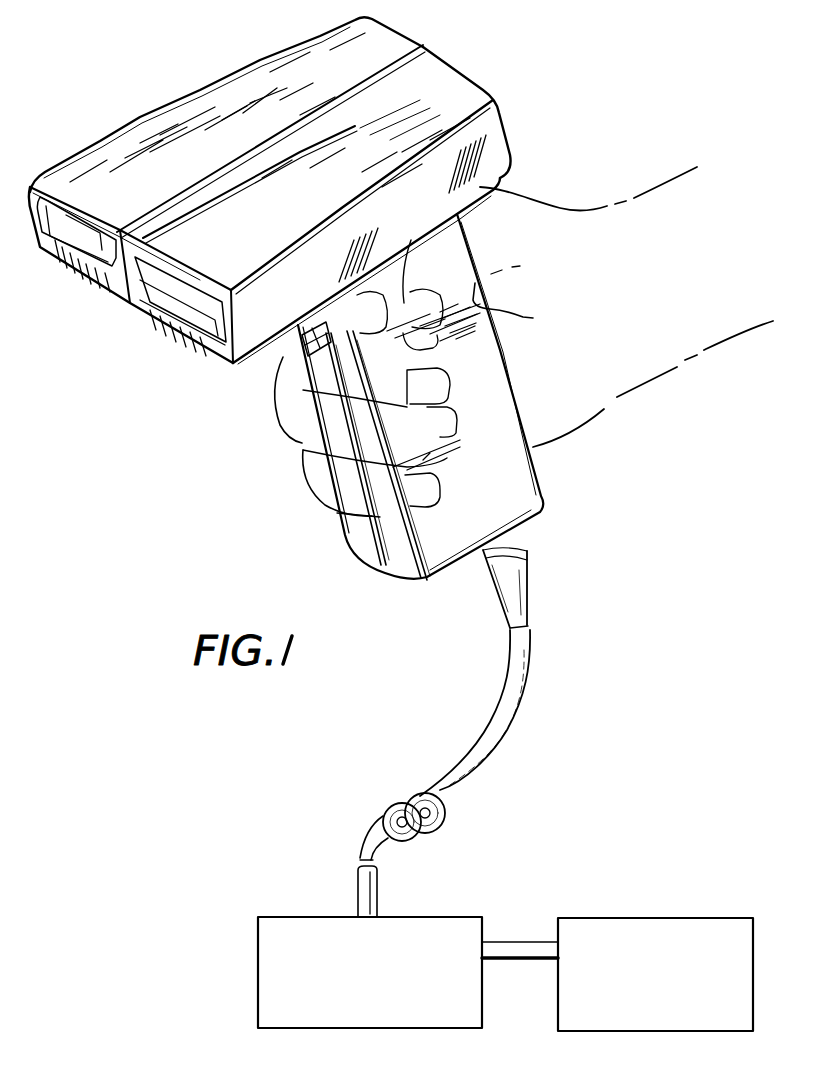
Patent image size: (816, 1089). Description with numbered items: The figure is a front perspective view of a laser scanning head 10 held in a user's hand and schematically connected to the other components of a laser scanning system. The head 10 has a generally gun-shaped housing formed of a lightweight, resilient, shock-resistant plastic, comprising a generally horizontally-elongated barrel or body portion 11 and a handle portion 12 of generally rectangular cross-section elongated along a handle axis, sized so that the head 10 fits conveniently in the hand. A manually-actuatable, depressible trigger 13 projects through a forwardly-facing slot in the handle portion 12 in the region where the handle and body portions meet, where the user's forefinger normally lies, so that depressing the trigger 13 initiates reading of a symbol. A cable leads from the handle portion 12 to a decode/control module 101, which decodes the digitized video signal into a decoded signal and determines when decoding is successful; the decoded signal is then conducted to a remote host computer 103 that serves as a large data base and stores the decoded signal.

The head 10 is at (493, 72).
The body portion 11 is at (441, 56).
The handle portion 12 is at (543, 500).
The trigger 13 is at (296, 352).
The decode/control module 101 is at (465, 916).
The host computer 103 is at (738, 900).